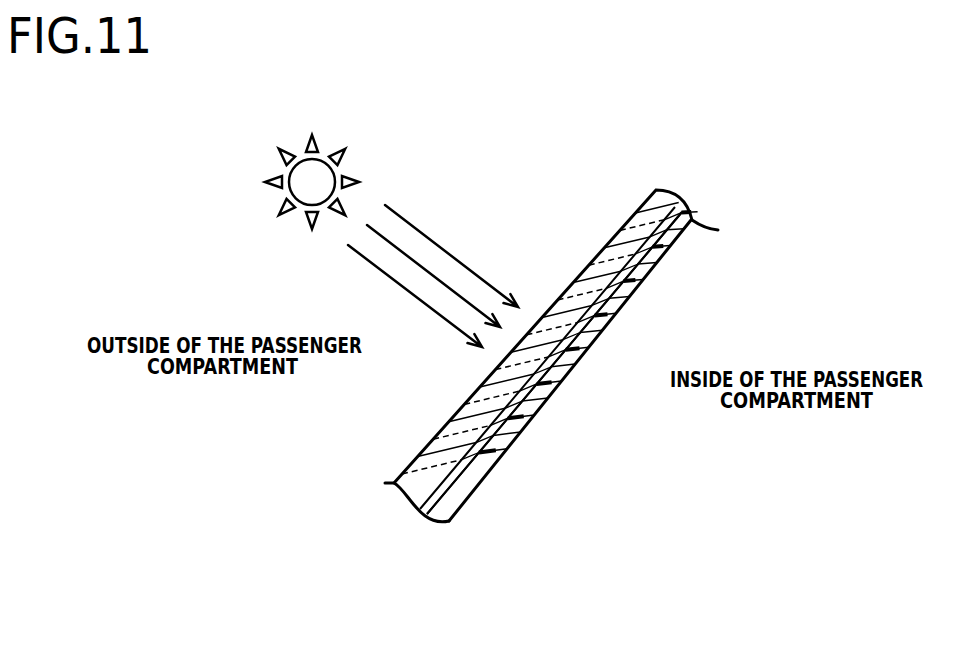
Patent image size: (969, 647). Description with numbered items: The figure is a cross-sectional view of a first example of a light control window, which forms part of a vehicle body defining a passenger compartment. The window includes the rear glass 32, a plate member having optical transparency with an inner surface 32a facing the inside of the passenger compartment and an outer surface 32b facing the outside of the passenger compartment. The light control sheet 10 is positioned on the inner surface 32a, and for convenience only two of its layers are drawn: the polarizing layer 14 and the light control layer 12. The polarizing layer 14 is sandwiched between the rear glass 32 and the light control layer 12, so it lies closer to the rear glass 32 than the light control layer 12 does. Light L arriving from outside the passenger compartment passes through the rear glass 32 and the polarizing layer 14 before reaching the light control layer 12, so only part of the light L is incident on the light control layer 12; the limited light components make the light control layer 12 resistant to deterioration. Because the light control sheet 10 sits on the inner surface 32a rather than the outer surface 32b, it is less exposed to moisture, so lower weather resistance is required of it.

The light control sheet 10 is at (542, 358).
The light control layer 12 is at (459, 508).
The polarizing layer 14 is at (416, 512).
The rear glass 32 is at (528, 331).
The inner surface 32a is at (691, 215).
The outer surface 32b is at (631, 218).
The light L is at (455, 253).